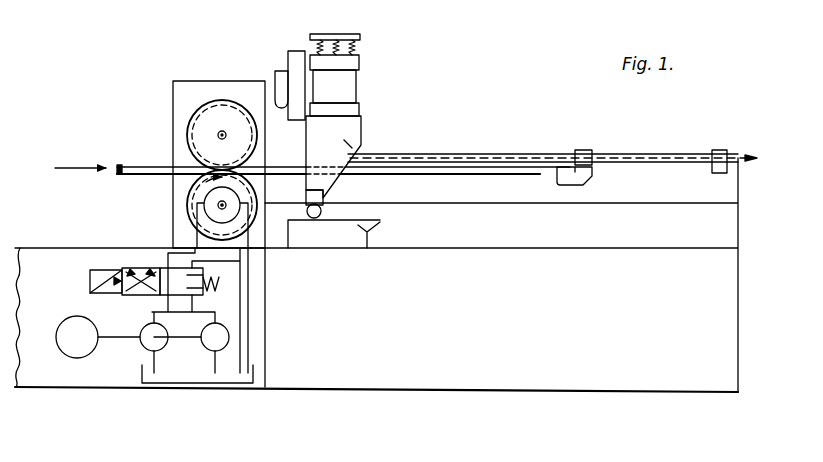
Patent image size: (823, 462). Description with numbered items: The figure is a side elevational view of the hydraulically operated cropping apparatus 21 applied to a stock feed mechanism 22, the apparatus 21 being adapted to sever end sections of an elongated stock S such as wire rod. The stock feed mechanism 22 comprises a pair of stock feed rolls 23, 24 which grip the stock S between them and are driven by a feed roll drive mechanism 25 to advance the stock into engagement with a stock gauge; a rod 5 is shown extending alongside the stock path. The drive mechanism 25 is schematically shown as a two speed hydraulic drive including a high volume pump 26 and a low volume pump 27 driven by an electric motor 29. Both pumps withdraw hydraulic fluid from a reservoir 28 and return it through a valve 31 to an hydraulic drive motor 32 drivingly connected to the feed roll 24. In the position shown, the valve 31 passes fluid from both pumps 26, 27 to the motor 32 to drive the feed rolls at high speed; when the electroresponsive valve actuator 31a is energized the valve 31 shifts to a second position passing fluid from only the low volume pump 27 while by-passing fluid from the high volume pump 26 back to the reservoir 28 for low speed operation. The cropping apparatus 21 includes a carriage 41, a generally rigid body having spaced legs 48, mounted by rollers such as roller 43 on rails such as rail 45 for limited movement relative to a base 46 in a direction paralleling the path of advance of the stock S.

The guide rod 5 is at (446, 160).
The stock S is at (135, 165).
The hydraulically operated cropping apparatus 21 is at (370, 107).
The stock feed mechanism 22 is at (166, 114).
The stock feed roll 23 is at (223, 118).
The stock feed roll 24 is at (200, 195).
The feed roll drive mechanism 25 is at (104, 245).
The high volume pump 26 is at (140, 346).
The low volume pump 27 is at (205, 347).
The reservoir 28 is at (200, 383).
The electric motor 29 is at (75, 357).
The valve 31 is at (138, 268).
The electroresponsive valve actuator 31a is at (90, 293).
The hydraulic drive motor 32 is at (243, 193).
The carriage 41 is at (368, 129).
The roller 43 is at (322, 212).
The rail 45 is at (372, 232).
The base 46 is at (717, 312).
The legs 48 is at (346, 142).